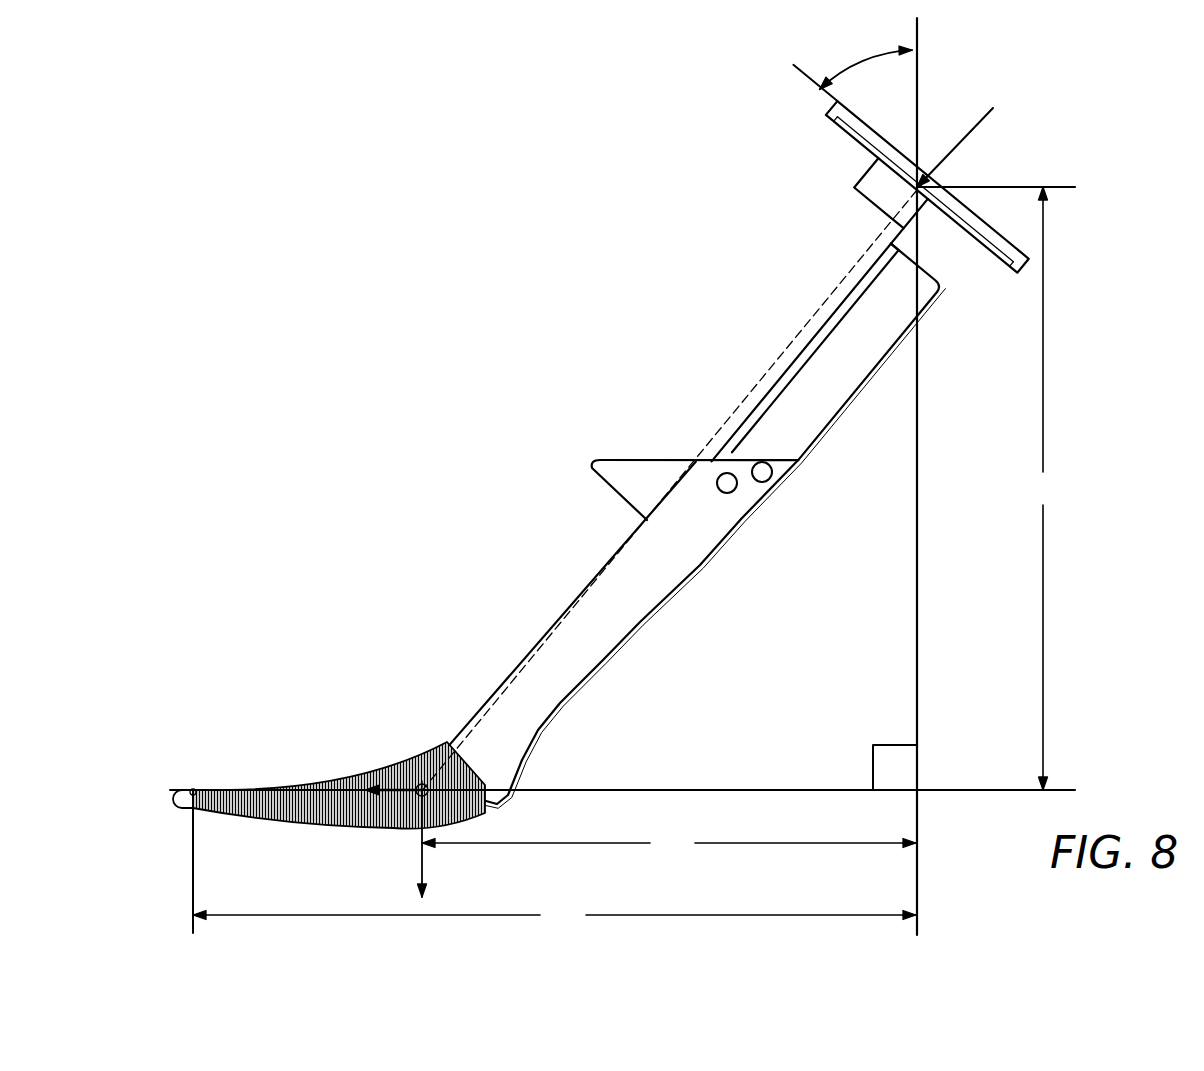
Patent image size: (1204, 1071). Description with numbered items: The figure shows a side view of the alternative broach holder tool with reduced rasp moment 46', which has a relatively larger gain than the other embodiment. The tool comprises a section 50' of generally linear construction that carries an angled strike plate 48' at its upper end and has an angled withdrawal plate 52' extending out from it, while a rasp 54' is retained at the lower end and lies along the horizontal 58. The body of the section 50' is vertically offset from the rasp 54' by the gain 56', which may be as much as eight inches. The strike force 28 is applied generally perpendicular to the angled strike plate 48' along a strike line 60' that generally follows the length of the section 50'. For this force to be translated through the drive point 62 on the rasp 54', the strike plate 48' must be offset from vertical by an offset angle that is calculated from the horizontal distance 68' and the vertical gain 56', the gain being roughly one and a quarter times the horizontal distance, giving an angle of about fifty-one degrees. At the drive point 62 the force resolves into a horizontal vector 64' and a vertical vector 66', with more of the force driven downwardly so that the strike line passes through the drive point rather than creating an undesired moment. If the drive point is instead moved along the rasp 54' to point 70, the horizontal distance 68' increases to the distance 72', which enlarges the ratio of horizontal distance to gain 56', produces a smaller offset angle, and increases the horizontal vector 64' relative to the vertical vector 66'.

The broach holder tool with reduced rasp moment 46' is at (598, 465).
The angled strike plate 48' is at (927, 230).
The section 50' is at (683, 483).
The angled withdrawal plate 52' is at (665, 470).
The rasp 54' is at (339, 779).
The gain 56' is at (1044, 488).
The horizontal 58 is at (685, 788).
The strike line 60' is at (791, 348).
The drive point 62 is at (420, 778).
The horizontal vector 64' is at (379, 744).
The vertical vector 66' is at (386, 843).
The horizontal distance 68' is at (669, 845).
The point 70 is at (193, 787).
The distance 72' is at (554, 916).
The strike force 28 is at (960, 132).